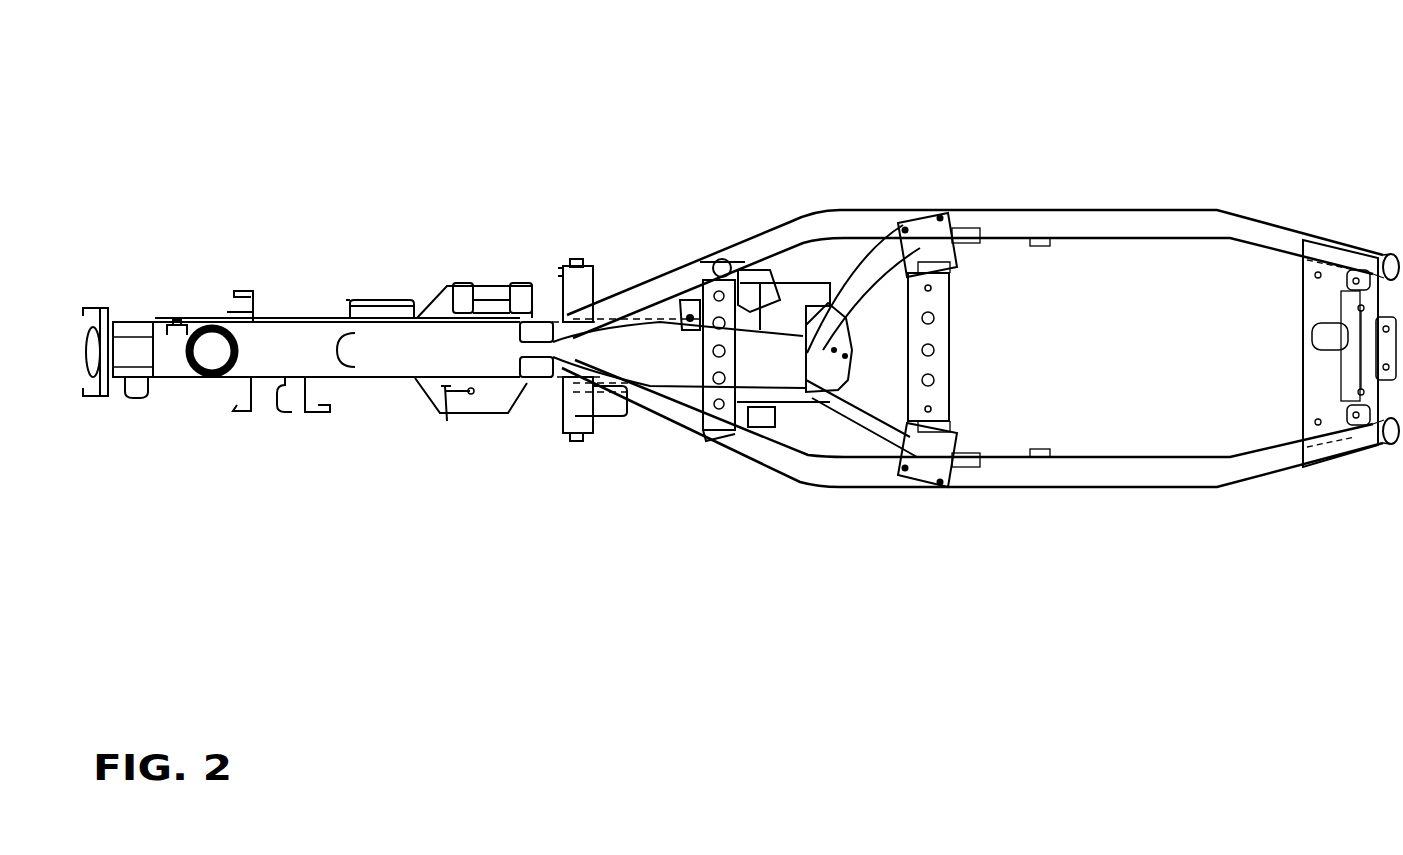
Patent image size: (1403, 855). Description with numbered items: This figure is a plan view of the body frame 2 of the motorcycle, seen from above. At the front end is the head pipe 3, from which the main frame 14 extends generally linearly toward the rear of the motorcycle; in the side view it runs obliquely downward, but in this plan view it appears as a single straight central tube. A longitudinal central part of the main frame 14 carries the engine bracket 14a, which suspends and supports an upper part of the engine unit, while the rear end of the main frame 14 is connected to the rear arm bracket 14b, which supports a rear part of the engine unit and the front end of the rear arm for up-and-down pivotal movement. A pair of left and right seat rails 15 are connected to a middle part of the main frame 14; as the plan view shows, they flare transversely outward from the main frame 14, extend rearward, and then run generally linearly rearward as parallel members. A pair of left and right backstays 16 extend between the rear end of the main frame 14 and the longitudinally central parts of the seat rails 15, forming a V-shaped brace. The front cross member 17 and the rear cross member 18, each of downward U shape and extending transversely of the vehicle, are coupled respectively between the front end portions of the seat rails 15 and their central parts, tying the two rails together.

The body frame 2 is at (420, 231).
The head pipe 3 is at (168, 380).
The main frame 14 is at (376, 386).
The engine bracket 14a is at (475, 414).
The rear arm bracket 14b is at (808, 402).
The seat rails 15 is at (784, 211).
The backstays 16 is at (866, 258).
The front cross member 17 is at (690, 358).
The rear cross member 18 is at (950, 336).